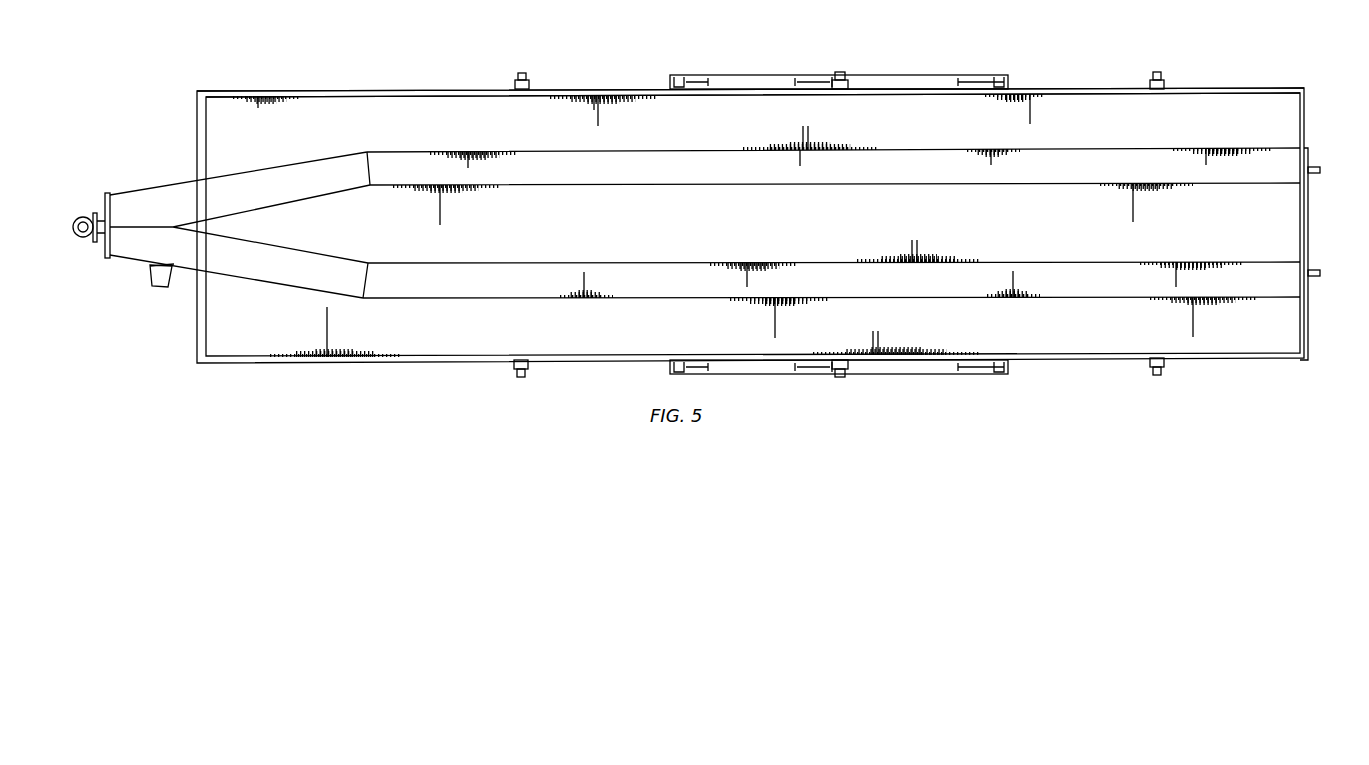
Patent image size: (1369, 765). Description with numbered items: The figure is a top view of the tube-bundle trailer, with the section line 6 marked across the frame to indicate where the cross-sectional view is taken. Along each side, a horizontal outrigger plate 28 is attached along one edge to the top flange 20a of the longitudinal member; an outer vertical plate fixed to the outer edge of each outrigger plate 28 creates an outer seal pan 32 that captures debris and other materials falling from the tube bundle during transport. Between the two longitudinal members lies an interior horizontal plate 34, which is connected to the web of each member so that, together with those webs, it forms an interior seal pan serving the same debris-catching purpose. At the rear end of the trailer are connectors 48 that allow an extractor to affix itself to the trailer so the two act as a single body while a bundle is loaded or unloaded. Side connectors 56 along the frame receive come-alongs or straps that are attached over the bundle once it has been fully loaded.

The section line 6- 6 is at (928, 74).
The top flange 20a is at (687, 168).
The horizontal outrigger plate 28 is at (410, 117).
The outer seal pan 32 is at (344, 112).
The interior horizontal plate 34 is at (548, 243).
The connector 48 is at (1318, 173).
The side connector 56 is at (524, 74).